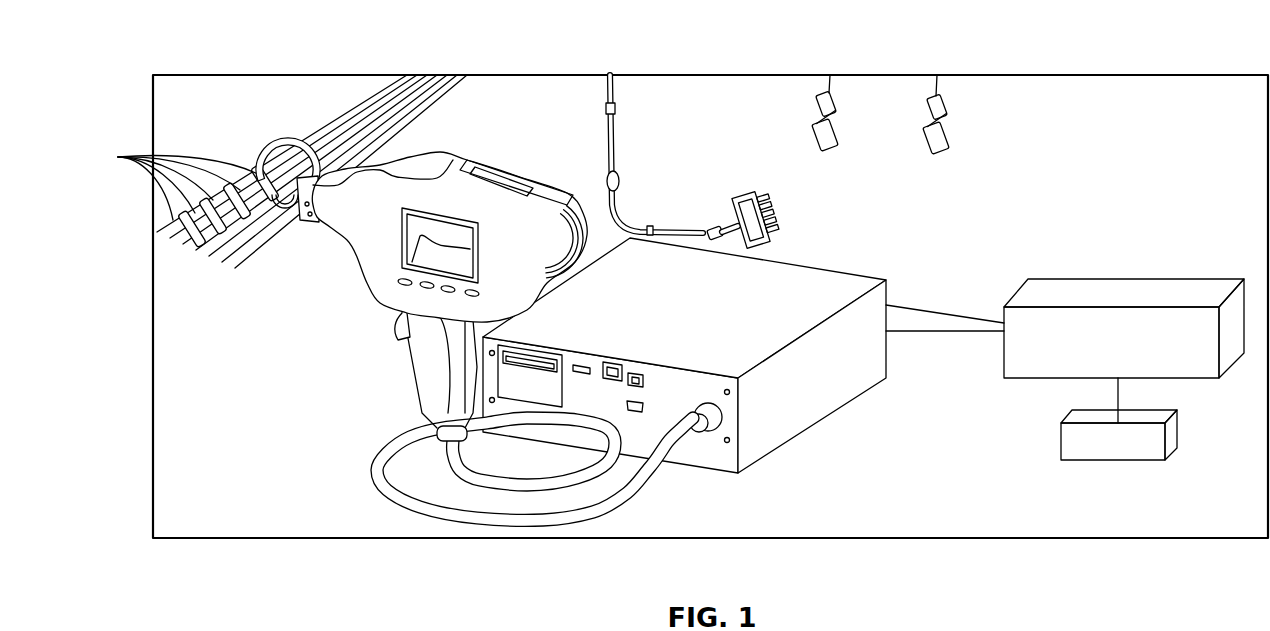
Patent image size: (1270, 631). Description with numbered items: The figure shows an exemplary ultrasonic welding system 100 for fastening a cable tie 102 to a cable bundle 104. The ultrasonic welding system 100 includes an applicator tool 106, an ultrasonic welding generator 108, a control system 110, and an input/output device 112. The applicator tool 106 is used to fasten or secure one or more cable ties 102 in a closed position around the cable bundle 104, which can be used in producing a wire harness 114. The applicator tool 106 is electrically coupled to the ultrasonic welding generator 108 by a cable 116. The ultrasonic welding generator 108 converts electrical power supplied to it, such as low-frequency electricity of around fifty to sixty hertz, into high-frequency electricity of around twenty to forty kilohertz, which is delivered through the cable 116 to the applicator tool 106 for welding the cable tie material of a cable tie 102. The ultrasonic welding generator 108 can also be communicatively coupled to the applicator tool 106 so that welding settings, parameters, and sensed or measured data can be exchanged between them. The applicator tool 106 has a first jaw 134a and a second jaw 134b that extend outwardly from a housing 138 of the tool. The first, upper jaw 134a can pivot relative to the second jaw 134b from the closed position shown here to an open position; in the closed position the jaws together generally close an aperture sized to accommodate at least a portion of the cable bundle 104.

The ultrasonic welding system 100 is at (1001, 95).
The cable tie 102 is at (662, 36).
The cable bundle 104 is at (357, 107).
The applicator tool 106 is at (370, 237).
The ultrasonic welding generator 108 is at (808, 395).
The control system 110 is at (1128, 278).
The input/output device 112 is at (1112, 461).
The wire harness 114 is at (687, 230).
The cable 116 is at (660, 483).
The first jaw 134a is at (290, 133).
The second jaw 134b is at (283, 207).
The housing 138 is at (448, 203).